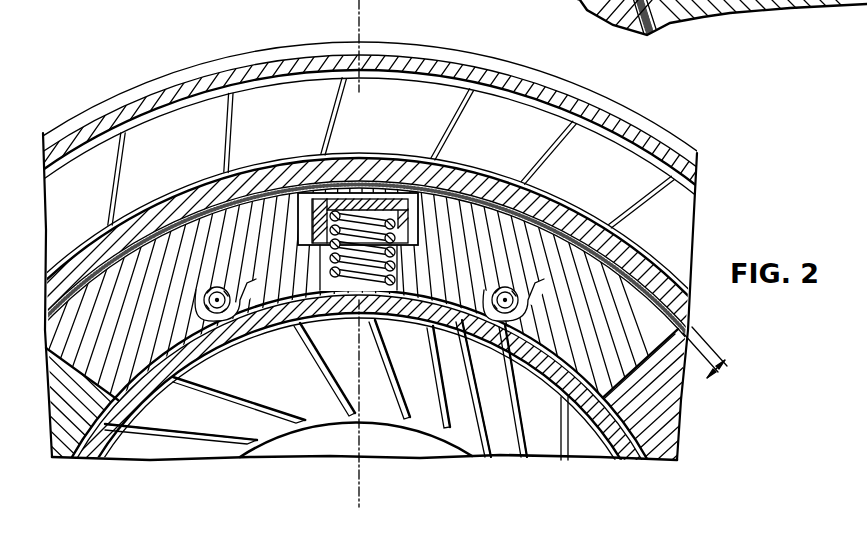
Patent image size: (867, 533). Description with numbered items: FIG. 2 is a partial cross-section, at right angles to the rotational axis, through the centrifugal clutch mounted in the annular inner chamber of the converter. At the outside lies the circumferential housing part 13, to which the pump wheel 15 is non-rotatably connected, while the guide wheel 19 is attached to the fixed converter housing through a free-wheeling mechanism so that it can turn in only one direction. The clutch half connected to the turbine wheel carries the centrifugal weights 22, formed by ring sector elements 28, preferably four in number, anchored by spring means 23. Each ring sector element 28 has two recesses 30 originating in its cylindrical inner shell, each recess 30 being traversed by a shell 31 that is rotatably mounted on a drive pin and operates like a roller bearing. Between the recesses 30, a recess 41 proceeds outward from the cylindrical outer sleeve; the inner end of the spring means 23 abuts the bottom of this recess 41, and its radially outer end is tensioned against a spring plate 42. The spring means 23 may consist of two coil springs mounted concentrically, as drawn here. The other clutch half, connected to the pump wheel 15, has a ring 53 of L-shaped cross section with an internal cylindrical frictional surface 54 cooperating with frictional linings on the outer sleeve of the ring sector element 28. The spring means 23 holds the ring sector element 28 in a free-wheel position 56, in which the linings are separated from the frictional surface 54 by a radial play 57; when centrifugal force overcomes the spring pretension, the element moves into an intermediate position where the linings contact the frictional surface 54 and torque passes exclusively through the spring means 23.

The circumferential housing part 13 is at (592, 91).
The pump wheel 15 is at (698, 160).
The guide wheel 19 is at (592, 433).
The centrifugal weights 22 is at (632, 377).
The spring means 23 is at (416, 226).
The ring sector element 28 is at (590, 347).
The recess 30 is at (262, 322).
The shell 31 is at (228, 320).
The recess 41 is at (398, 207).
The spring plate 42 is at (328, 205).
The ring 53 is at (200, 182).
The internal cylindrical frictional surface 54 is at (370, 197).
The free-wheel position 56 is at (312, 348).
The radial play 57 is at (700, 384).